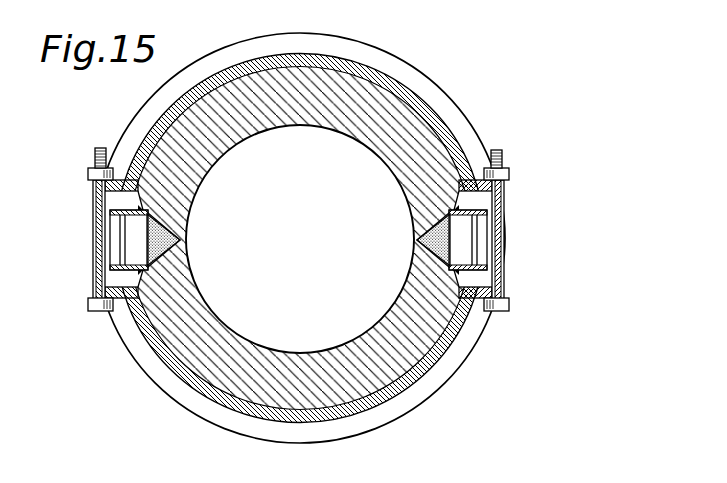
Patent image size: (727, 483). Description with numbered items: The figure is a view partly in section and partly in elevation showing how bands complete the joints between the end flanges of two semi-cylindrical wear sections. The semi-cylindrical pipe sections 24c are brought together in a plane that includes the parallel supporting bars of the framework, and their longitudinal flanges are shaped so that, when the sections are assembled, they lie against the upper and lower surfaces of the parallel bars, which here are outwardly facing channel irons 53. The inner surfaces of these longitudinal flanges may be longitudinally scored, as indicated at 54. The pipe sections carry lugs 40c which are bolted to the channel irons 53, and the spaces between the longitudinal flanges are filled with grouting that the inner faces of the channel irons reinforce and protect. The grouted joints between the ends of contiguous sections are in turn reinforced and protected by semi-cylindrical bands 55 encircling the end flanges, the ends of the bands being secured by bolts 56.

The semi-cylindrical pipe section 24c is at (356, 136).
The lug 40c is at (127, 201).
The channel iron 53 is at (143, 240).
The longitudinal scoring 54 is at (131, 167).
The semi-cylindrical band 55 is at (405, 96).
The bolt 56 is at (110, 268).